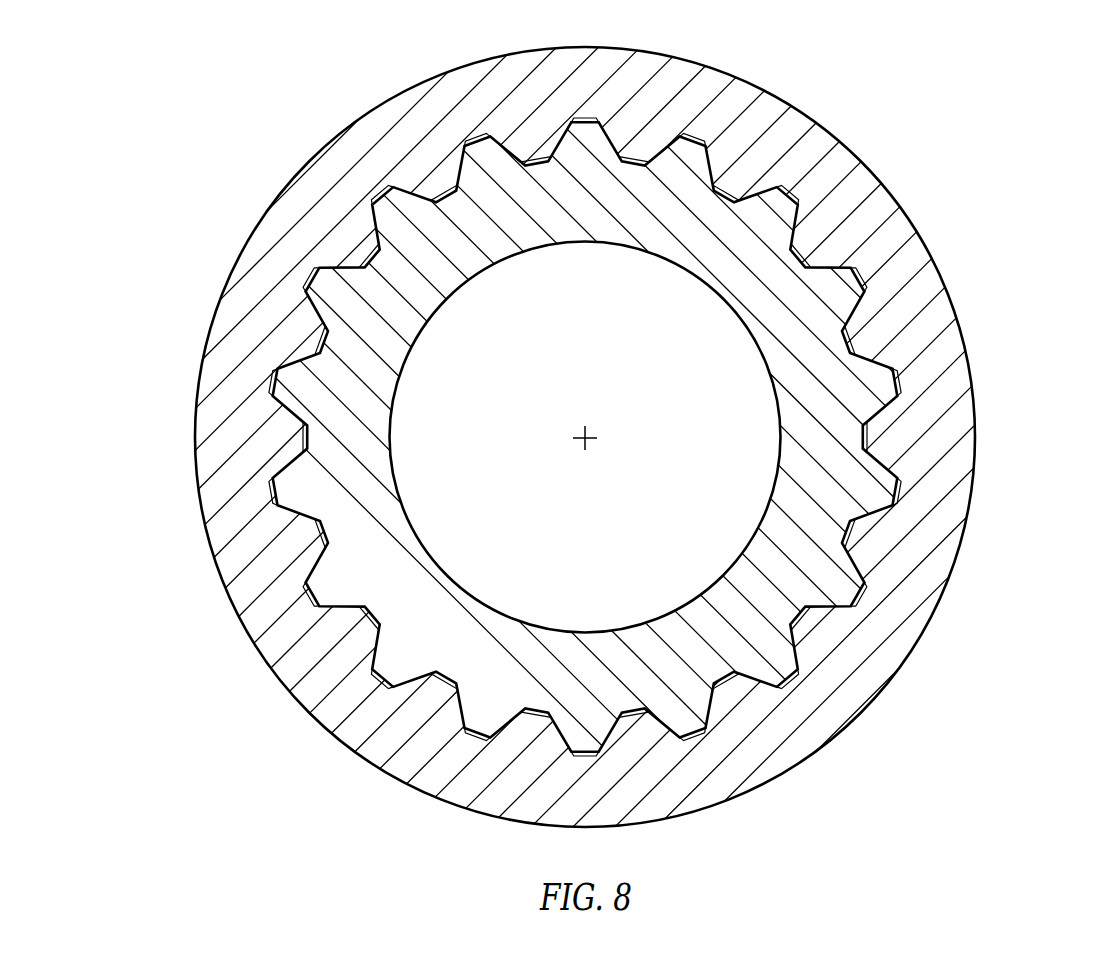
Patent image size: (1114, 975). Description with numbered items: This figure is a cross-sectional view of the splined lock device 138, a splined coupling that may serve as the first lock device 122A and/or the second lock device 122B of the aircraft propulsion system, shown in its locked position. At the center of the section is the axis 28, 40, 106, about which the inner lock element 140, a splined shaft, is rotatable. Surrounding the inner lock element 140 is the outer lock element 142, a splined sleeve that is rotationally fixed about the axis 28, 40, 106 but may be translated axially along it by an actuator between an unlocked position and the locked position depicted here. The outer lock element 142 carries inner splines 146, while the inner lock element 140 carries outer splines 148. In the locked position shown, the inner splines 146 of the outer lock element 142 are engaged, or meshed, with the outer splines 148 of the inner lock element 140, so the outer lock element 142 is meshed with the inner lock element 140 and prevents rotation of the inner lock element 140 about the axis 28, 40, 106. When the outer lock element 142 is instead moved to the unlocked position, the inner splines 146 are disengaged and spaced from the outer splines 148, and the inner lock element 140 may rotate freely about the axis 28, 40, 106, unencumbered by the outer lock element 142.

The first lock device 122A is at (1022, 53).
The second lock device 122B is at (652, 425).
The splined lock device 138 is at (652, 425).
The outer lock element 142 is at (934, 251).
The inner lock element 140 is at (748, 352).
The inner splines 146 is at (838, 268).
The outer splines 148 is at (848, 268).
The axis 28 is at (587, 440).
The axis 40 is at (596, 477).
The axis 106 is at (596, 477).